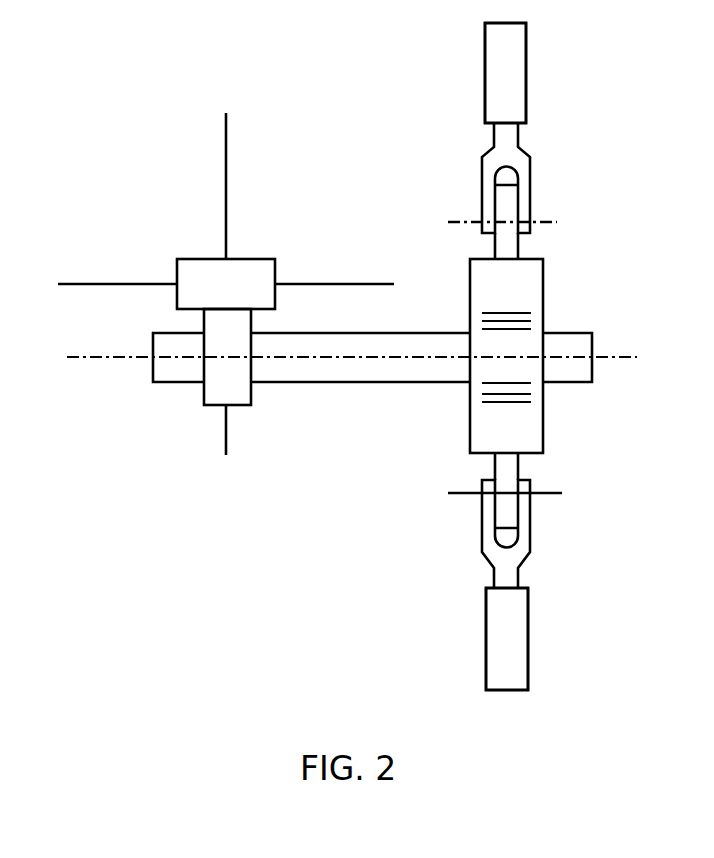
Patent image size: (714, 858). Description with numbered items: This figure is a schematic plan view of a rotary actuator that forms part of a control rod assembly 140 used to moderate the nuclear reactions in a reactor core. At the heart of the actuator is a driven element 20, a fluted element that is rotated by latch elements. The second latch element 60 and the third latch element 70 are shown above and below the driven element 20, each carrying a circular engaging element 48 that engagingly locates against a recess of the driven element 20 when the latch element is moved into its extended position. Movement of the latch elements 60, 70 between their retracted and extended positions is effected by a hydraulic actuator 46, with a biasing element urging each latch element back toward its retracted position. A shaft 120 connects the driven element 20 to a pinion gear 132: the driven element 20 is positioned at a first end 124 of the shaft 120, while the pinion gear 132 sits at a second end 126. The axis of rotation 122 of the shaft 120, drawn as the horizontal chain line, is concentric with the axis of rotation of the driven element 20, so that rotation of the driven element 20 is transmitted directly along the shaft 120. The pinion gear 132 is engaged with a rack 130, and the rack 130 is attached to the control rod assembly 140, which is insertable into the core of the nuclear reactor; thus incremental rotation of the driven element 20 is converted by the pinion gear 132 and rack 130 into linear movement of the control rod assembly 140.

The driven element 20 is at (487, 283).
The hydraulic actuator 46 is at (528, 82).
The circular engaging element 48 is at (500, 198).
The second latch element 60 is at (495, 68).
The third latch element 70 is at (515, 627).
The shaft 120 is at (447, 383).
The axis of rotation 122 is at (340, 357).
The first end 124 is at (574, 342).
The second end 126 is at (173, 373).
The rack 130 is at (197, 273).
The pinion gear 132 is at (238, 395).
The control rod assembly 140 is at (226, 153).